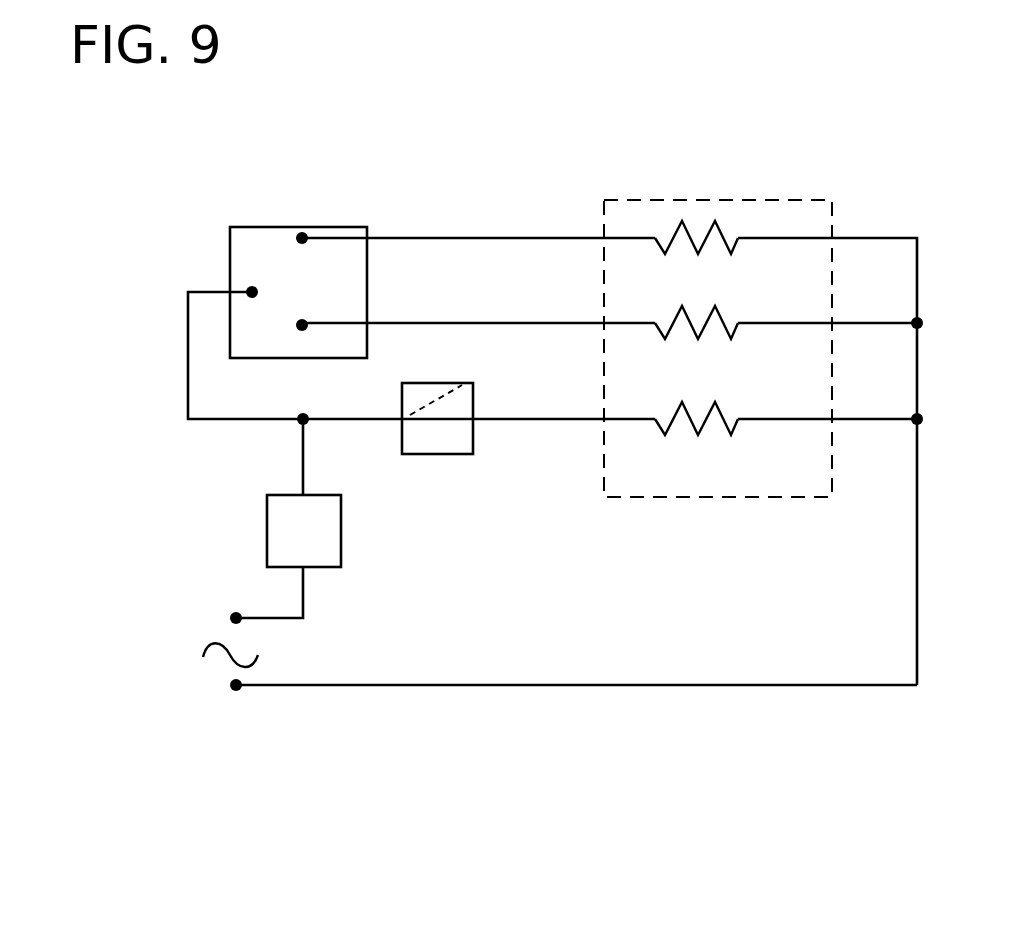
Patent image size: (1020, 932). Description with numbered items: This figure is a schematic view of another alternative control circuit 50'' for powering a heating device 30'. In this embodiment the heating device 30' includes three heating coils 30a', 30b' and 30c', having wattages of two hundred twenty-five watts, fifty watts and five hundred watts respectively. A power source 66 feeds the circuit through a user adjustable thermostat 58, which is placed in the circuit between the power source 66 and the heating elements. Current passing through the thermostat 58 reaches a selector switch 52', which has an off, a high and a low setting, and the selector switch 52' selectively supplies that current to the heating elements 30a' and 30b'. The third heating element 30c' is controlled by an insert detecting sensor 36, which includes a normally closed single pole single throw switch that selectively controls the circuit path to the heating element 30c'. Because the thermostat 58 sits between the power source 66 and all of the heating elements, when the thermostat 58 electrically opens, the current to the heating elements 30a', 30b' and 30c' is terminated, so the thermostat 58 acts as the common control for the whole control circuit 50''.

The selector switch 52' is at (232, 292).
The heating device 30' is at (718, 308).
The heating coil 30a' is at (730, 258).
The heating coil 30b' is at (730, 343).
The heating coil 30c' is at (731, 438).
The insert detecting sensor 36 is at (473, 404).
The thermostat 58 is at (341, 536).
The power source 66 is at (215, 618).
The control circuit 50'' is at (131, 759).